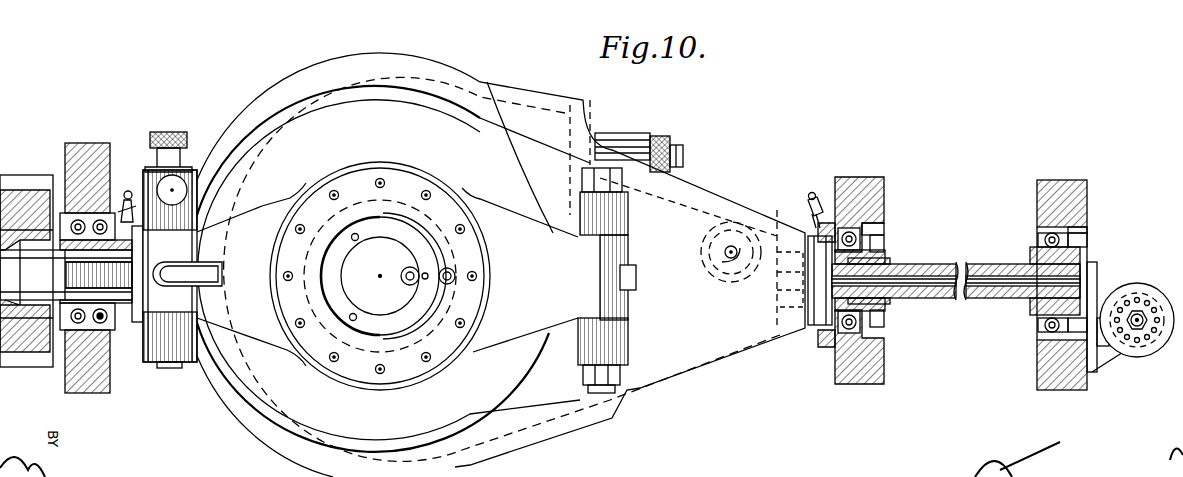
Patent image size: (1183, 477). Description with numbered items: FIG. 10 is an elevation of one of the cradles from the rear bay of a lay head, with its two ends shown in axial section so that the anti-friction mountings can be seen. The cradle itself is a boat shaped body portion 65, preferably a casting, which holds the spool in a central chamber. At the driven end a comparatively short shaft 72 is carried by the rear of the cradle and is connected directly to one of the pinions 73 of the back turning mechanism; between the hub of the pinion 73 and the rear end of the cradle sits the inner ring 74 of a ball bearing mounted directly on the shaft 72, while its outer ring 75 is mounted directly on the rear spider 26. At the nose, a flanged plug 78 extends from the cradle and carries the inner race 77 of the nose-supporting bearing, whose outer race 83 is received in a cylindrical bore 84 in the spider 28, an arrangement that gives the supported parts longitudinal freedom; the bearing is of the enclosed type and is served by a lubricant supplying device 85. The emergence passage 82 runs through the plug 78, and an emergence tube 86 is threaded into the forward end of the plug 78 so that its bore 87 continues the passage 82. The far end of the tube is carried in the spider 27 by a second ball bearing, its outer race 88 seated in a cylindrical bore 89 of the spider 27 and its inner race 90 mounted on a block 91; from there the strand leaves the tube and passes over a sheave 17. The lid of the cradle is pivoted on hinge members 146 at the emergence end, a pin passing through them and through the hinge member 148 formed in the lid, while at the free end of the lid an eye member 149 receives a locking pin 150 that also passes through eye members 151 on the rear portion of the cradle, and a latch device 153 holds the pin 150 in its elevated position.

The sheave 17 is at (1148, 290).
The rear spider 26 is at (100, 382).
The spider at the emergence end 27 is at (1063, 304).
The spider 28 is at (861, 288).
The boat shaped body portion 65 is at (686, 192).
The shaft 72 is at (71, 274).
The pinion 73 is at (32, 180).
The inner ring 74 is at (92, 223).
The outer ring 75 is at (61, 222).
The inner race 77 is at (802, 310).
The plug 78 is at (880, 317).
The emergence tube or passage 82 is at (772, 277).
The outer race 83 is at (862, 212).
The cylindrical bore 84 is at (880, 230).
The lubricant supplying device 85 is at (815, 196).
The emergence tube 86 is at (944, 268).
The bore 87 is at (1081, 279).
The outer race 88 is at (1073, 230).
The cylindrical bore 89 is at (1088, 228).
The inner race 90 is at (1044, 242).
The block 91 is at (1040, 255).
The hinge members 146 is at (624, 220).
The hinge member 148 is at (630, 259).
The eye member 149 is at (198, 230).
The locking pin 150 is at (175, 368).
The eye members 151 is at (142, 205).
The latch device 153 is at (190, 272).